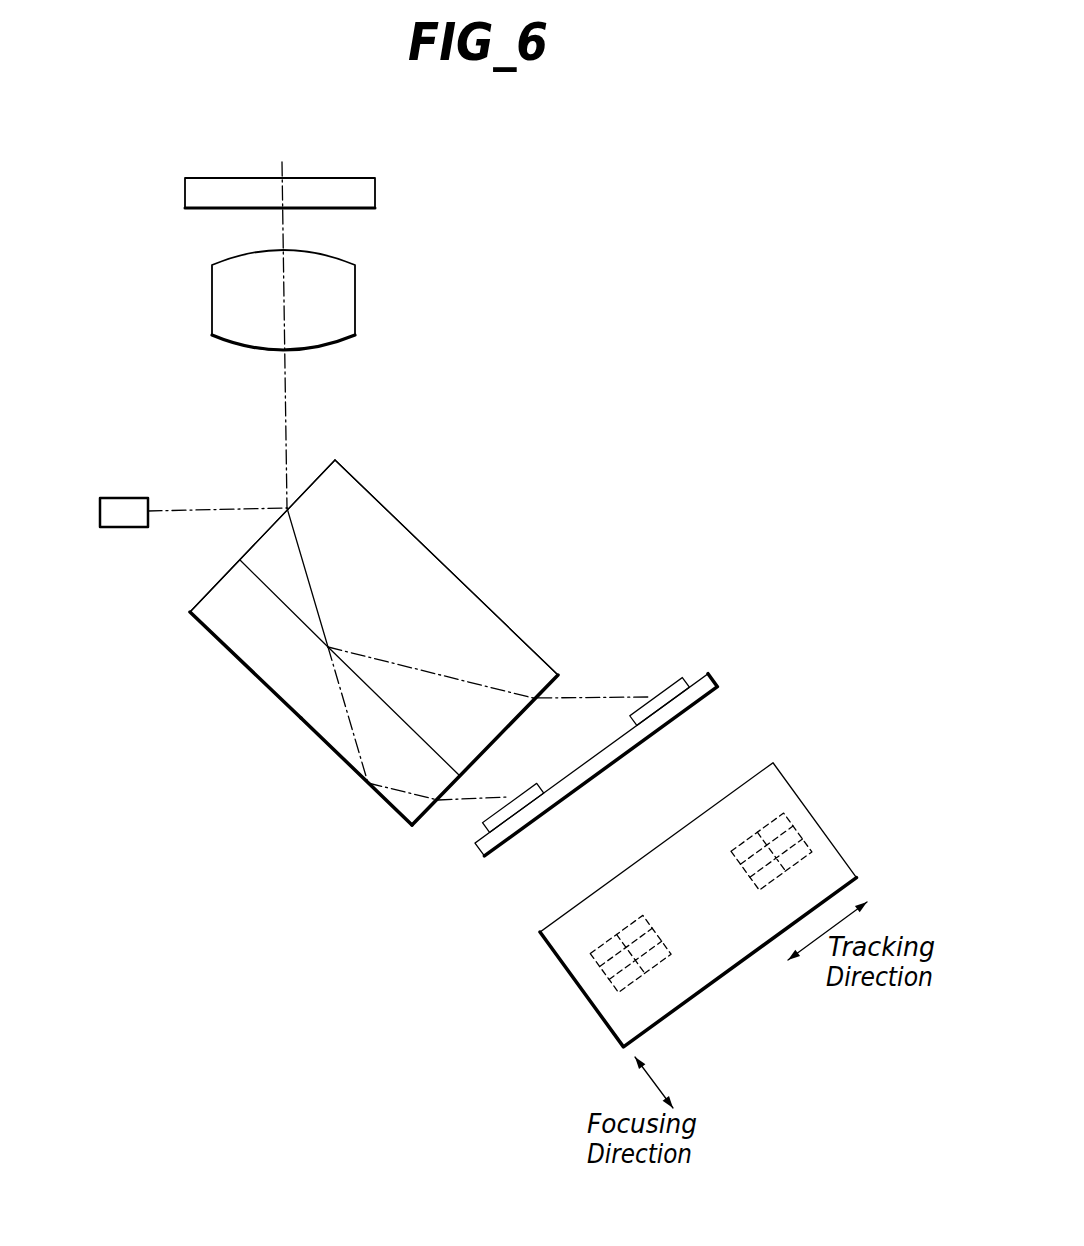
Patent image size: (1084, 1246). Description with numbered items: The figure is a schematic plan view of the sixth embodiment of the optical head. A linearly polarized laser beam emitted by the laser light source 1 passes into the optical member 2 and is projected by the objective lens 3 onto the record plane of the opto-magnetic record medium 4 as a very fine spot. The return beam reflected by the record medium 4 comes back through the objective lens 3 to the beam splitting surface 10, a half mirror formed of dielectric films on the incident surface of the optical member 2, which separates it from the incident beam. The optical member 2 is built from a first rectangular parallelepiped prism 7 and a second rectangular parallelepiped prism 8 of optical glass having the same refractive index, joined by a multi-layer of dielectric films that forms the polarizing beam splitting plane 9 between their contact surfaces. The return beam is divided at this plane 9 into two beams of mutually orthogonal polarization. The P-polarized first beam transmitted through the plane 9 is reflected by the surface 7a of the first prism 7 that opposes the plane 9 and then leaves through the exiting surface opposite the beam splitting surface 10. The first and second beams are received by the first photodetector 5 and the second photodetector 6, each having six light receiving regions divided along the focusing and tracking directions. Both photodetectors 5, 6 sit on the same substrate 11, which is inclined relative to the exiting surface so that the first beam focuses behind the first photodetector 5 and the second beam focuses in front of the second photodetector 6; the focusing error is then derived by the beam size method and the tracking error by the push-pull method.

The laser light source 1 is at (130, 497).
The optical member 2 is at (445, 538).
The objective lens 3 is at (355, 283).
The opto-magnetic record medium 4 is at (355, 178).
The first photodetector 5 is at (488, 817).
The second photodetector 6 is at (660, 692).
The first rectangular parallelepiped prism 7 is at (258, 650).
The surface of the first prism 7a is at (297, 715).
The second rectangular parallelepiped prism 8 is at (457, 600).
The polarizing beam splitting plane 9 is at (265, 590).
The beam splitting surface 10 is at (327, 473).
The substrate 11 is at (618, 767).